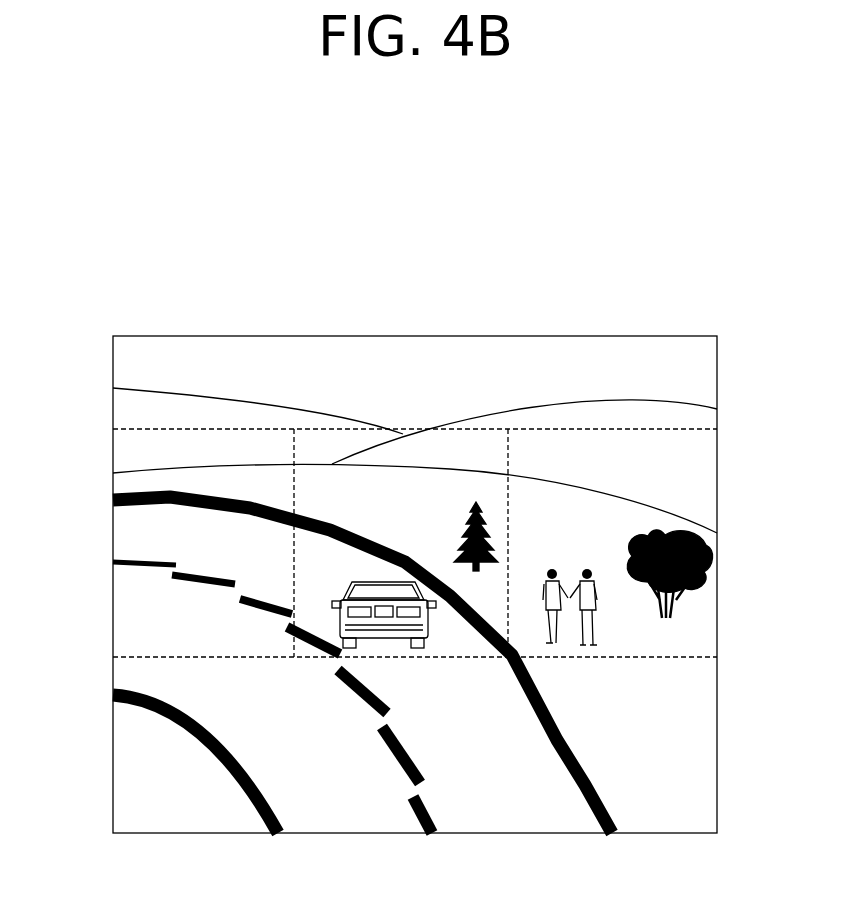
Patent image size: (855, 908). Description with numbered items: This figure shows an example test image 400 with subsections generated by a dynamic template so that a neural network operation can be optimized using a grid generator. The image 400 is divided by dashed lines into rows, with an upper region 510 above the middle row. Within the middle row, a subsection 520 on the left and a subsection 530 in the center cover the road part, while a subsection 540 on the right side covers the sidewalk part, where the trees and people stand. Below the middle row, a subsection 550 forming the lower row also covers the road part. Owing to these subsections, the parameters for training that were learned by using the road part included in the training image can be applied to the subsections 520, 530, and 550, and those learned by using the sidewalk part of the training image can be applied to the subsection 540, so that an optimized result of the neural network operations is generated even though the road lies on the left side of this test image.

The display image 400 is at (596, 337).
The first region (upper) 510 is at (501, 352).
The subsection for the road part on a left of the middle row 520 is at (123, 616).
The subsection for the road part on a center of the middle row 530 is at (370, 448).
The subsection for the sidewalk part on a right side of the middle row 540 is at (700, 618).
The subsection for the road part on the lower row 550 is at (495, 822).